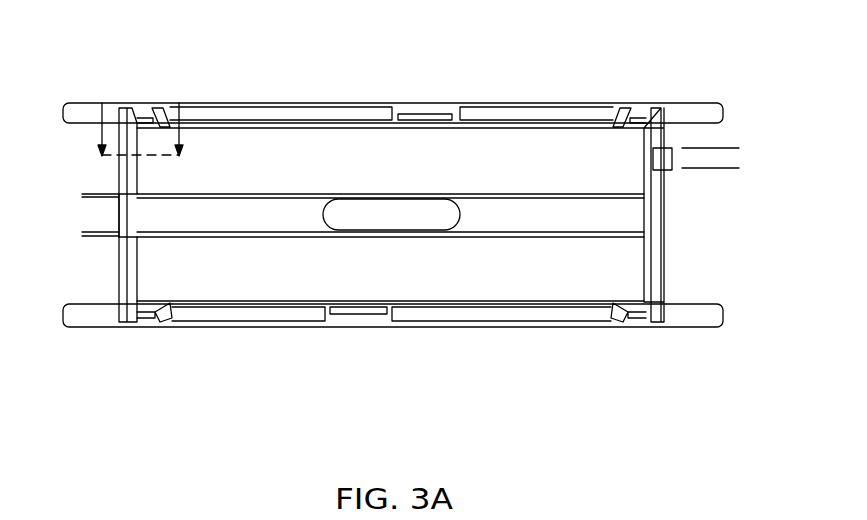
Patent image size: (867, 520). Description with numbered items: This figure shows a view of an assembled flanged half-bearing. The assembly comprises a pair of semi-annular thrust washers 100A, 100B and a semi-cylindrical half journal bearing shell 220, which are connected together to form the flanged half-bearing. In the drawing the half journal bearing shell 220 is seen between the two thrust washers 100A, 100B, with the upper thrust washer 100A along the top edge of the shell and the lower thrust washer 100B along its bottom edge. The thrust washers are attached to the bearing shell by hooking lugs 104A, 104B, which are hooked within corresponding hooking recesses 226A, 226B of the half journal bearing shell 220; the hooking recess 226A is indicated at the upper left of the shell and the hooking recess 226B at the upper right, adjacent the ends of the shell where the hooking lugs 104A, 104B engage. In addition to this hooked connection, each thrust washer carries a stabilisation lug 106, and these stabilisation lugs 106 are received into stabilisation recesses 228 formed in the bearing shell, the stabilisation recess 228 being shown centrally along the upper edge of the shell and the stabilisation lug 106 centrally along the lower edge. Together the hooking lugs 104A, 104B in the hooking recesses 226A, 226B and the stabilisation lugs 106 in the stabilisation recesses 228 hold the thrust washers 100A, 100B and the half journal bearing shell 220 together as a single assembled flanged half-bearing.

The semi-annular thrust washer 100A is at (393, 62).
The semi-annular thrust washer 100B is at (393, 372).
The hooking lug 104A is at (143, 318).
The hooking lug 104B is at (637, 310).
The stabilisation lug 106 is at (360, 314).
The semi-cylindrical half journal bearing shell 220 is at (690, 241).
The hooking recess 226A is at (128, 86).
The hooking recess 226B is at (672, 84).
The stabilisation recess 228 is at (459, 74).